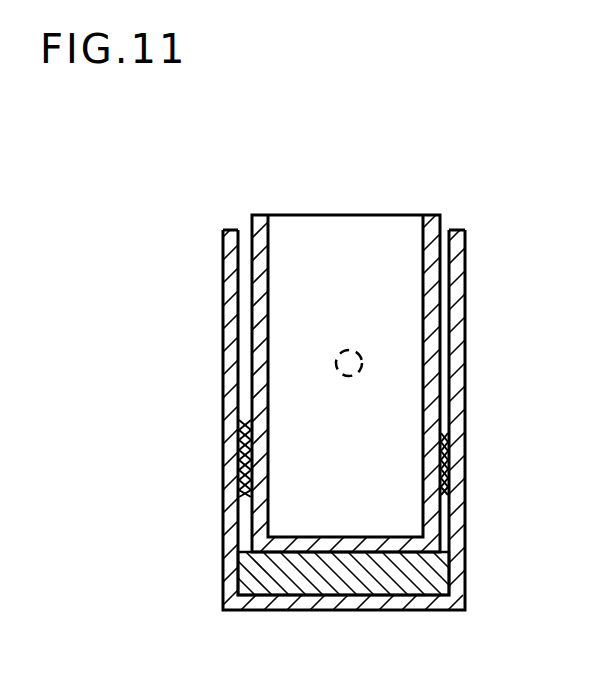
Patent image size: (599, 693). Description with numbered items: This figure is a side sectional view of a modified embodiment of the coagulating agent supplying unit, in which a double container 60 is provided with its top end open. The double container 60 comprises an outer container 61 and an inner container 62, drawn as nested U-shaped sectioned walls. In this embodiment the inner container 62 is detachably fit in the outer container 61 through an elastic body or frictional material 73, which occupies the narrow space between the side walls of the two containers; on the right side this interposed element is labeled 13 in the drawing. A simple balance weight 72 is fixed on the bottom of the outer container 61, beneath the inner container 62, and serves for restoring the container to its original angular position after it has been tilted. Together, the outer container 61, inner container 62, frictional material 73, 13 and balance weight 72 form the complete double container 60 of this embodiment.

The double container 60 is at (398, 183).
The outer container 61 is at (457, 278).
The inner container 62 is at (433, 215).
The balance weight 72 is at (433, 575).
The elastic body or frictional material 73 is at (240, 450).
The right spacer member 13 is at (455, 440).